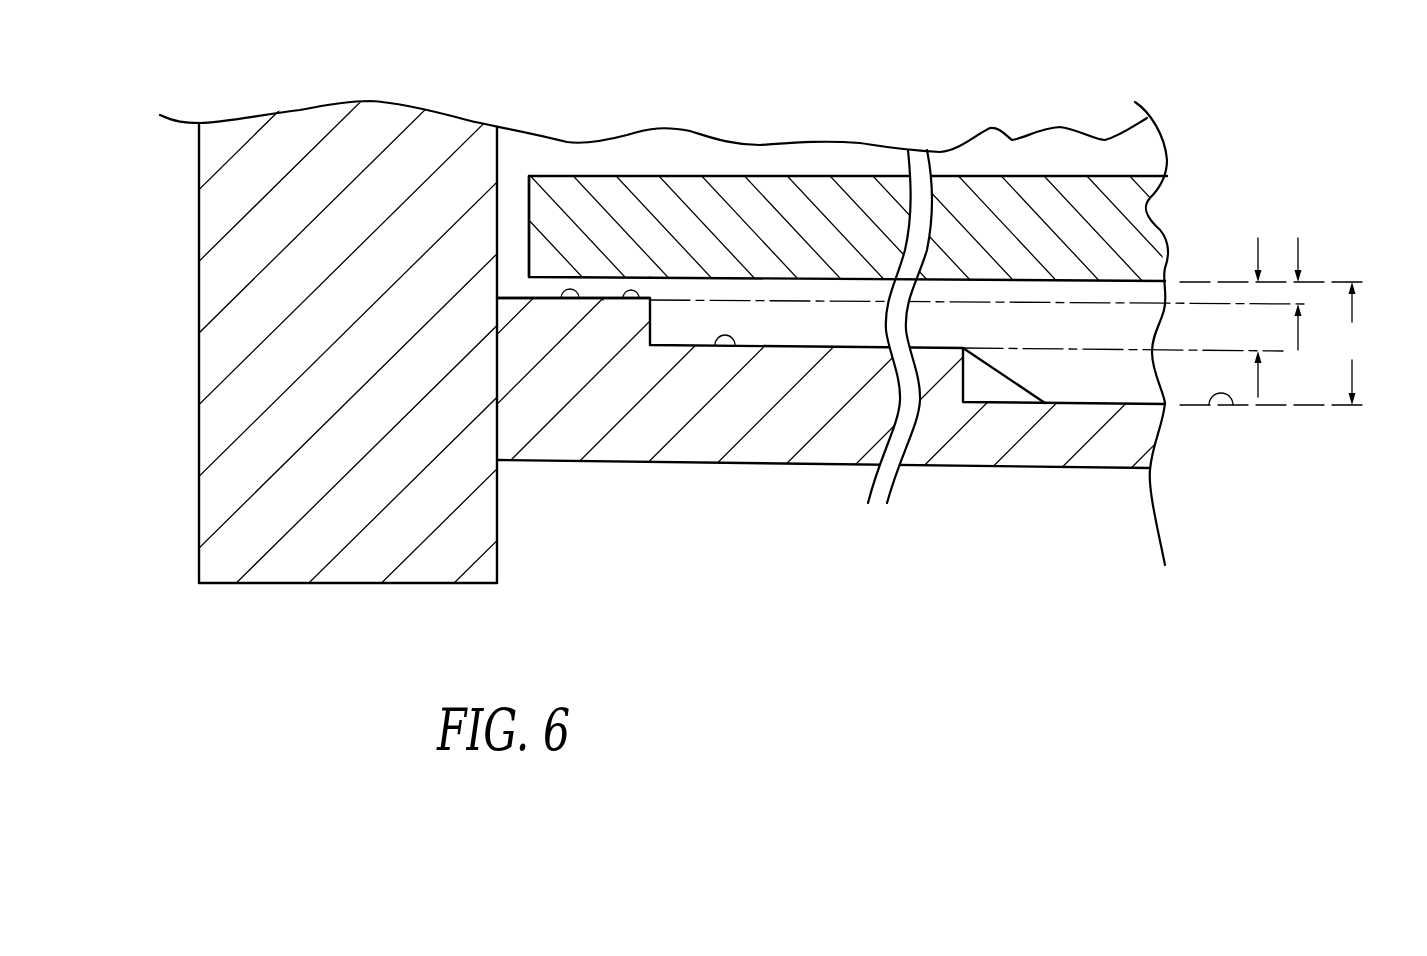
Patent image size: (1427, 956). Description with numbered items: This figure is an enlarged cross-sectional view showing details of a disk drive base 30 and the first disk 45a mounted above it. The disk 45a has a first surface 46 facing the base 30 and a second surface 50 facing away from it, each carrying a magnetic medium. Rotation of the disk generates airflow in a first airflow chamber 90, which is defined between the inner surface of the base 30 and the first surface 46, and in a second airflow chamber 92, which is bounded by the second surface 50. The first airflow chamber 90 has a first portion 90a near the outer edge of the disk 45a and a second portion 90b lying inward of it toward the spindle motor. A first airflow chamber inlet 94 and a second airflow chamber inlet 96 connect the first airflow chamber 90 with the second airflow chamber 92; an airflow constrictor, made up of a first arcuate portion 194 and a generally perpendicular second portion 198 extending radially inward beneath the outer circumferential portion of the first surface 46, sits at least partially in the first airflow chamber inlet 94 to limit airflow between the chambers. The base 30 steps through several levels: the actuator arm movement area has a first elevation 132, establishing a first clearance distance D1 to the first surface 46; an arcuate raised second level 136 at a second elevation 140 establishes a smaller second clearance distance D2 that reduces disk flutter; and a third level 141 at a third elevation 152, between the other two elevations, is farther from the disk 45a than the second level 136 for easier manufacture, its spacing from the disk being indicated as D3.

The base 30 is at (199, 366).
The first disk 45a is at (523, 226).
The first surface 46 is at (792, 279).
The second surface 50 is at (702, 176).
The first airflow chamber 90 is at (1055, 636).
The first portion of the first airflow chamber 90a is at (579, 300).
The second portion of the first airflow chamber 90b is at (1025, 367).
The second airflow chamber 92 is at (833, 152).
The first airflow chamber inlet 94 is at (525, 298).
The second airflow chamber inlet 96 is at (528, 162).
The first elevation 132 is at (1235, 403).
The second level 136 is at (603, 298).
The second elevation 140 is at (1223, 304).
The third level 141 is at (738, 352).
The third elevation 152 is at (1113, 348).
The first arcuate portion 194 is at (508, 153).
The second portion 198 is at (638, 302).
The first clearance distance D1 is at (1350, 343).
The second clearance distance D2 is at (1298, 294).
The dimension D3 is at (1260, 317).